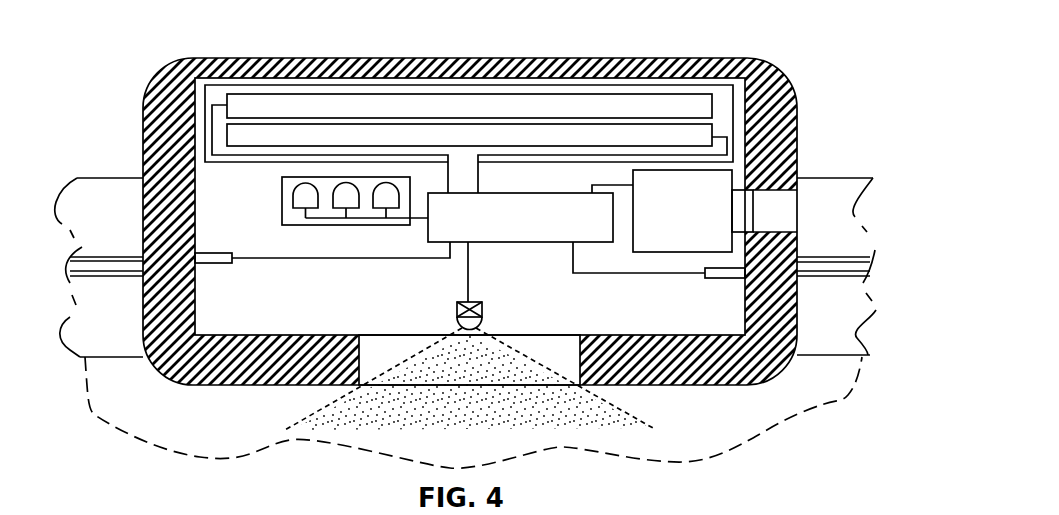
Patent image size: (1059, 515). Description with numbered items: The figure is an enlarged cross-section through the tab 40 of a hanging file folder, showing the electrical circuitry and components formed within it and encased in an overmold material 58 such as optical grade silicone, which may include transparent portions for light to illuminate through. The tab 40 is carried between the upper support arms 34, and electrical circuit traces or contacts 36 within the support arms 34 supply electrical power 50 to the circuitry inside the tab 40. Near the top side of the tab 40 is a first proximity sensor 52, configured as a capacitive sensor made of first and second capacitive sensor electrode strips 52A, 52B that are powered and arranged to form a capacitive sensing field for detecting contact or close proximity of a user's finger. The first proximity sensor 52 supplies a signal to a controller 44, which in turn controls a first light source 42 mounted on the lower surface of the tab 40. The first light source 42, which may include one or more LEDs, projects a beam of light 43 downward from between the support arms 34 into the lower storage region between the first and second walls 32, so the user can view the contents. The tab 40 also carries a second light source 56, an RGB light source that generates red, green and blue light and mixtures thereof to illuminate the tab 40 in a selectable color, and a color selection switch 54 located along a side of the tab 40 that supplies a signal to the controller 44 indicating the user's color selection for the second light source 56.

The first and second walls 32 is at (157, 418).
The upper support arms 34 is at (100, 205).
The electrical circuit traces or contacts 36 is at (95, 250).
The tab 40 is at (673, 58).
The first light source 42 is at (480, 303).
The light 43 is at (393, 365).
The controller 44 is at (593, 243).
The electrical power 50 is at (270, 258).
The first proximity sensor 52 is at (206, 85).
The first capacitive sensor electrode strip 52A is at (253, 103).
The second capacitive sensor electrode strip 52B is at (312, 133).
The color selection switch 54 is at (645, 252).
The second light source 56 is at (338, 177).
The overmold material 58 is at (168, 93).